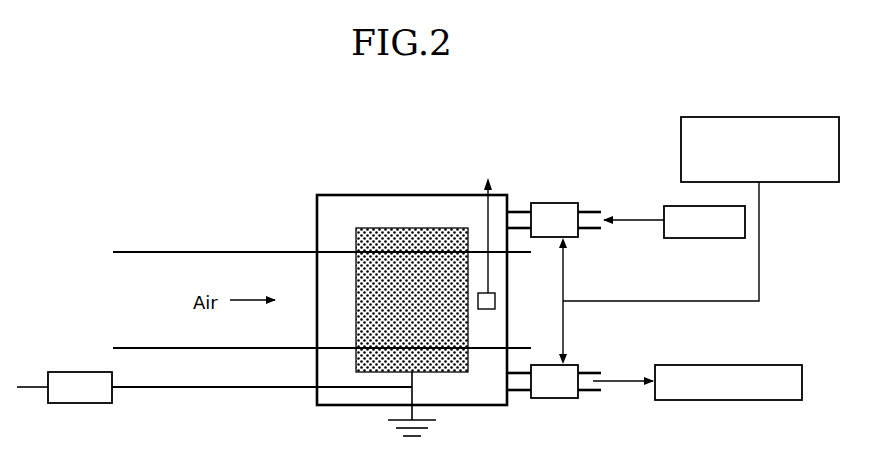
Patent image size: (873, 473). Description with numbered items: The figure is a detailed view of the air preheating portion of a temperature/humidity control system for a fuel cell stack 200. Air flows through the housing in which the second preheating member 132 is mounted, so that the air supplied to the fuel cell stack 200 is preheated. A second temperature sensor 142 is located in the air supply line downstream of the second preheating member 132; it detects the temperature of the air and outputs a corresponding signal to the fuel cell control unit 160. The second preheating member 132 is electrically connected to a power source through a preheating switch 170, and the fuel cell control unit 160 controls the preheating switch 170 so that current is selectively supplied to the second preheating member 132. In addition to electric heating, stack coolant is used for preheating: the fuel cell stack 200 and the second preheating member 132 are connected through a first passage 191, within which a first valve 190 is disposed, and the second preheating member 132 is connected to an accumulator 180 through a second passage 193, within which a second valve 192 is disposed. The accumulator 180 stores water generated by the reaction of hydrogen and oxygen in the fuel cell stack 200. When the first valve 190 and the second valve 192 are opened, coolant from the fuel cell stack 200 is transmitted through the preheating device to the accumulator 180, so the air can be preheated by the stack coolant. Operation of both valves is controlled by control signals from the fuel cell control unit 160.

The second preheating member 132 is at (452, 360).
The second temperature sensor 142 is at (486, 233).
The fuel cell control unit 160 is at (763, 117).
The preheating switch 170 is at (78, 403).
The accumulator 180 is at (735, 365).
The first valve 190 is at (553, 203).
The first passage 191 is at (592, 209).
The second valve 192 is at (553, 398).
The second passage 193 is at (592, 393).
The fuel cell stack 200 is at (702, 238).